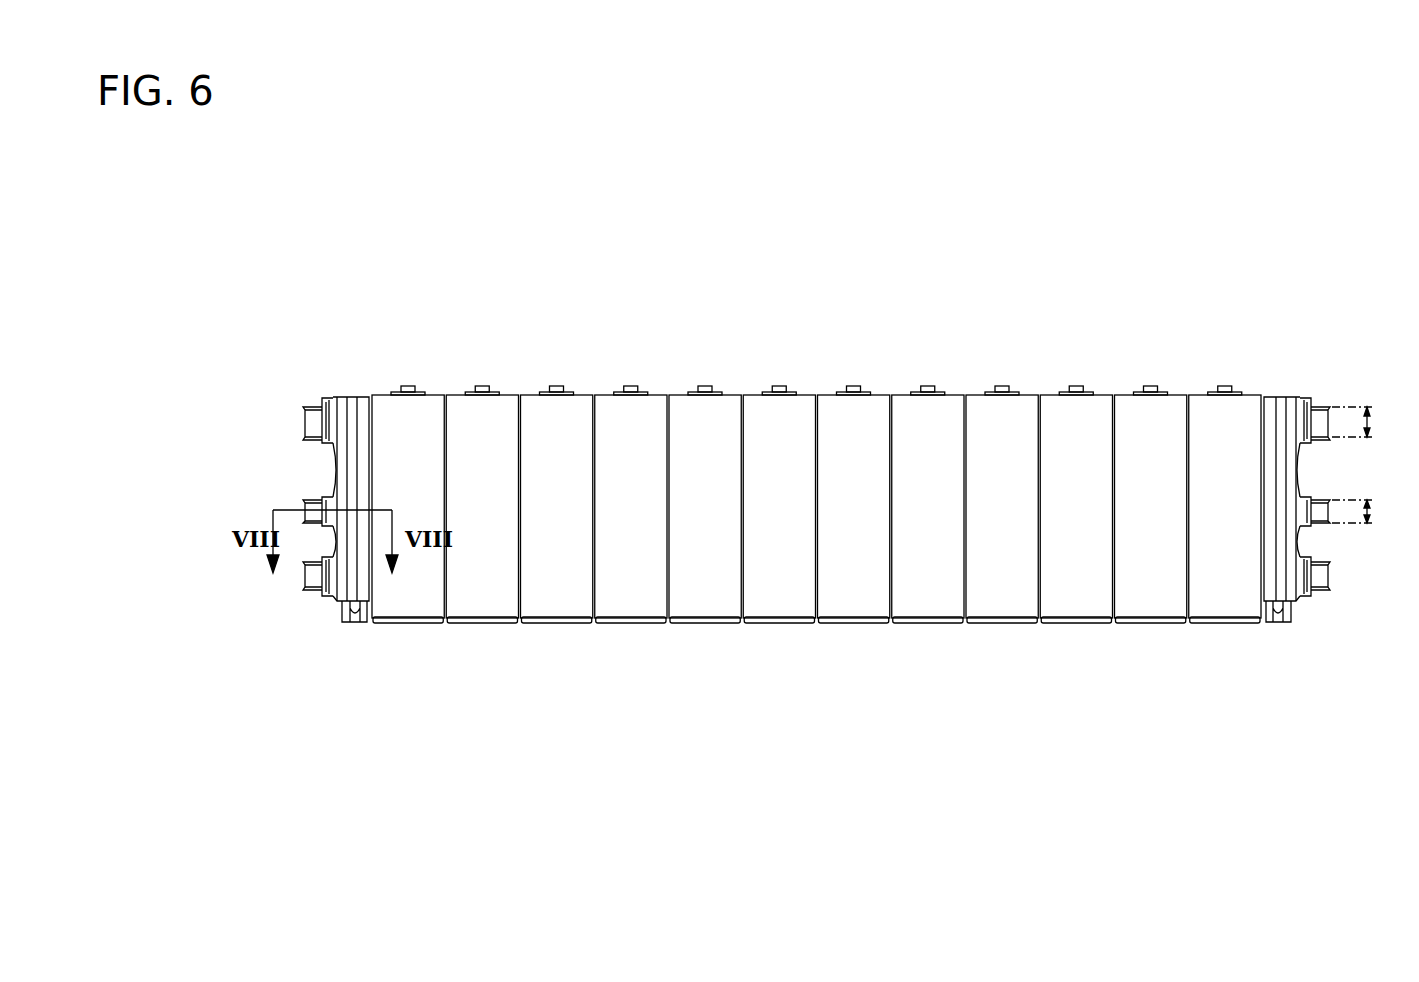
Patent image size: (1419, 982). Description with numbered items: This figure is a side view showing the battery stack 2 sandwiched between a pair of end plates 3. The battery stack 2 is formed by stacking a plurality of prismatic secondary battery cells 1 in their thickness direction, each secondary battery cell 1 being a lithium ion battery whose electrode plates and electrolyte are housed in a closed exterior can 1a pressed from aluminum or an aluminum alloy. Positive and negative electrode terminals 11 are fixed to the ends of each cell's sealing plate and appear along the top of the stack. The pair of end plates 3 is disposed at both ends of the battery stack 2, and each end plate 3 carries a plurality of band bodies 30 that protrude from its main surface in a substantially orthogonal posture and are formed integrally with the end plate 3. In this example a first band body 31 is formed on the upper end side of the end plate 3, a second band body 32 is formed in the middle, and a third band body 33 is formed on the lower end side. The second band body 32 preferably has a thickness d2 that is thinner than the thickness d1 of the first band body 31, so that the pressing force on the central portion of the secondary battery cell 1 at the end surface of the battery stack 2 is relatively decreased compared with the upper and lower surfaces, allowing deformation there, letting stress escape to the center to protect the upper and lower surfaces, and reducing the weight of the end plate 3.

The secondary battery cell 1 is at (826, 445).
The exterior can 1a is at (430, 410).
The electrode terminals 11 is at (407, 387).
The battery stack 2 is at (1262, 667).
The end plate 3 is at (333, 373).
The band bodies 30 is at (737, 500).
The first band body 31 is at (305, 421).
The second band body 32 is at (315, 505).
The third band body 33 is at (769, 598).
The thickness of first band body d1 is at (1371, 429).
The thickness of second band body d2 is at (1371, 520).